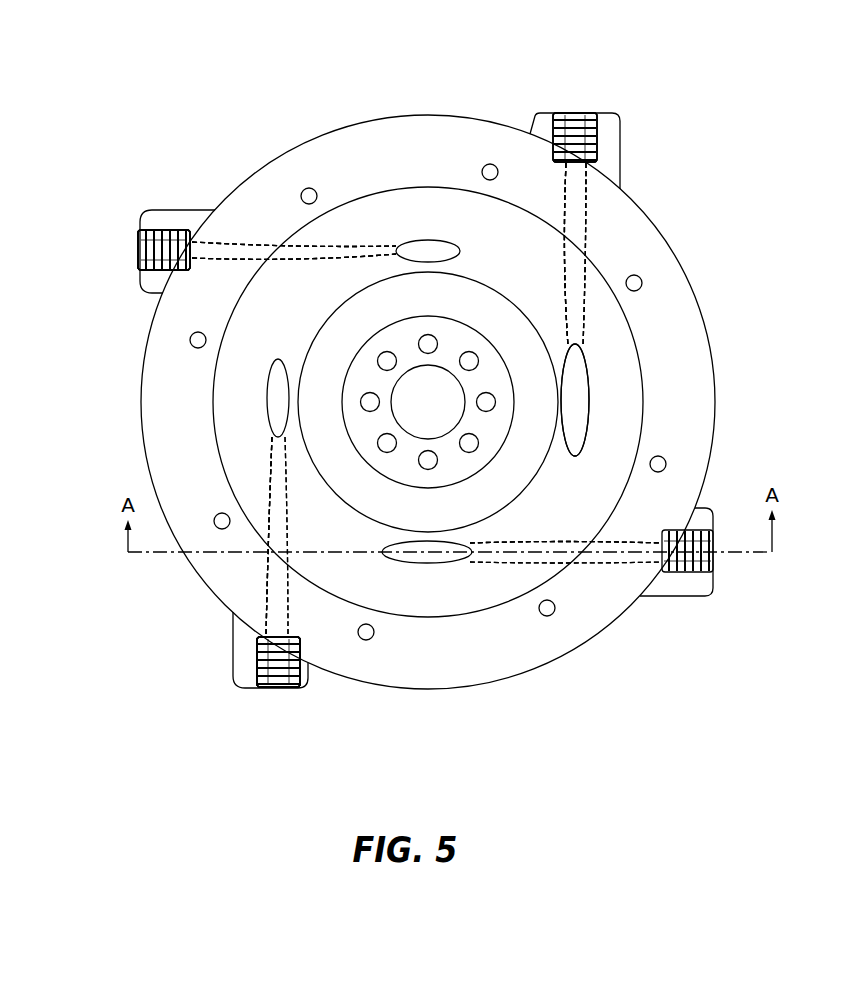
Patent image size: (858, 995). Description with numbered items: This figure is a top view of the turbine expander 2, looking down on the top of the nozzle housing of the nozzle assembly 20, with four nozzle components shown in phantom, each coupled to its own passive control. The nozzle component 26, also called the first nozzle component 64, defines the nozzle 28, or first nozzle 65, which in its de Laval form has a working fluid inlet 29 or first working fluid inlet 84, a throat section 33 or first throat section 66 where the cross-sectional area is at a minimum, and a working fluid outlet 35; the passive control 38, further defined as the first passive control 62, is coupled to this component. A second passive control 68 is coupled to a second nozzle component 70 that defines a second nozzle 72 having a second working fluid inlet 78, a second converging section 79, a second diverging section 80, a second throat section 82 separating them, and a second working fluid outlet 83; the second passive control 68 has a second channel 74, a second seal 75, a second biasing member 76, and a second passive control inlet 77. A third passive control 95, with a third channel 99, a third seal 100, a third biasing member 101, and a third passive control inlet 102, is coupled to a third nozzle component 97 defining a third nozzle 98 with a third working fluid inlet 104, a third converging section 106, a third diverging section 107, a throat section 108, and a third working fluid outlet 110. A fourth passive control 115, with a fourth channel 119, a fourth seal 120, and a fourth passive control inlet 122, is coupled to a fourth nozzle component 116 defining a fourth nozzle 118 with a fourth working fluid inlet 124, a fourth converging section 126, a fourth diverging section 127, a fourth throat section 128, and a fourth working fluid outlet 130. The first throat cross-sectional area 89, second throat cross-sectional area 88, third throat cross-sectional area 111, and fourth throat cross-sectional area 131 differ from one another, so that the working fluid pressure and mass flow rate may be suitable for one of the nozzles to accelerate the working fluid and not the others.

The turbine expander 2 is at (86, 84).
The nozzle assembly 20 is at (302, 132).
The nozzle component 26 is at (568, 645).
The nozzle 28 is at (566, 616).
The working fluid inlet 29 is at (676, 593).
The throat section 33 is at (566, 648).
The working fluid outlet 35 is at (413, 553).
The passive control 38 is at (727, 577).
The first passive control 62 is at (713, 575).
The first nozzle component 64 is at (627, 562).
The first nozzle 65 is at (597, 553).
The first throat section 66 is at (505, 553).
The second passive control 68 is at (258, 683).
The second nozzle component 70 is at (270, 570).
The second nozzle 72 is at (270, 540).
The second channel 74 is at (303, 685).
The second seal 75 is at (260, 690).
The second biasing member 76 is at (257, 660).
The second passive control inlet 77 is at (277, 700).
The second working fluid inlet 78 is at (258, 634).
The second converging section 79 is at (320, 663).
The second diverging section 80 is at (273, 455).
The second throat section 82 is at (277, 463).
The second working fluid outlet 83 is at (280, 375).
The first working fluid inlet 84 is at (637, 596).
The second throat cross-sectional area 88 is at (258, 474).
The first throat cross-sectional area 89 is at (499, 575).
The third passive control 95 is at (148, 213).
The third nozzle component 97 is at (230, 237).
The third nozzle 98 is at (257, 250).
The third channel 99 is at (175, 230).
The third seal 100 is at (138, 237).
The third biasing member 101 is at (150, 269).
The third passive control inlet 102 is at (130, 256).
The third working fluid inlet 104 is at (197, 252).
The third converging section 106 is at (305, 250).
The third diverging section 107 is at (368, 246).
The throat section 108 is at (348, 252).
The third working fluid outlet 110 is at (433, 246).
The third throat cross-sectional area 111 is at (225, 330).
The fourth passive control 115 is at (625, 118).
The fourth nozzle component 116 is at (588, 218).
The fourth nozzle 118 is at (577, 238).
The fourth channel 119 is at (597, 142).
The fourth seal 120 is at (572, 113).
The fourth passive control inlet 122 is at (580, 105).
The fourth working fluid inlet 124 is at (588, 172).
The fourth converging section 126 is at (577, 278).
The fourth diverging section 127 is at (585, 335).
The fourth throat section 128 is at (572, 315).
The fourth working fluid outlet 130 is at (577, 435).
The fourth throat cross-sectional area 131 is at (596, 323).